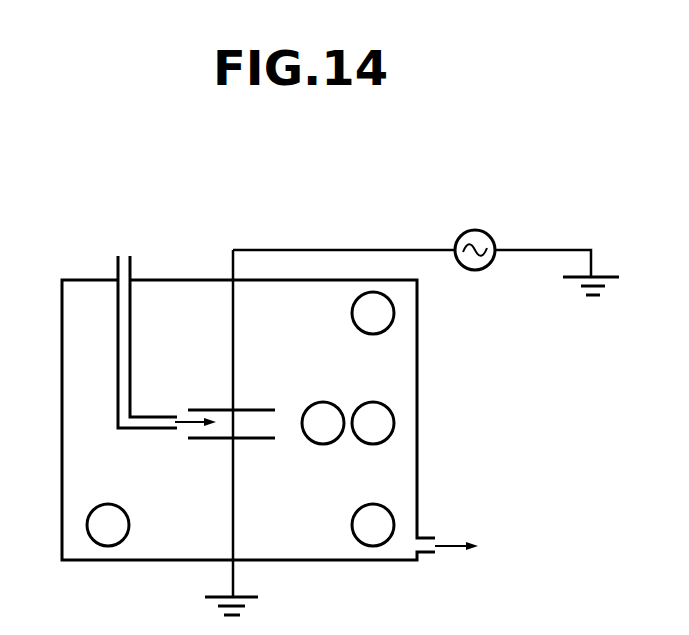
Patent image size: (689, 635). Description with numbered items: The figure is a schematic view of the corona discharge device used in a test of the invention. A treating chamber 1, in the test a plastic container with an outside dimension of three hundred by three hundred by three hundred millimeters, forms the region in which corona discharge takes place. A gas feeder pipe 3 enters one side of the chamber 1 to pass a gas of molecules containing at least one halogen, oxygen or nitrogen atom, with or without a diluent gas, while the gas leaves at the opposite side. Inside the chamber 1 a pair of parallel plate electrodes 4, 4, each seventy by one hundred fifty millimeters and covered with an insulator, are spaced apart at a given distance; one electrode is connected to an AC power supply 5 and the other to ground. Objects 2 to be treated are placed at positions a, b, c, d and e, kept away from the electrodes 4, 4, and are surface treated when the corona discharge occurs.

The treating chamber 1 is at (177, 279).
The objects to be treated 2 is at (393, 321).
The gas feeder pipe 3 is at (118, 388).
The electrodes 4 is at (257, 410).
The AC power supply 5 is at (485, 233).